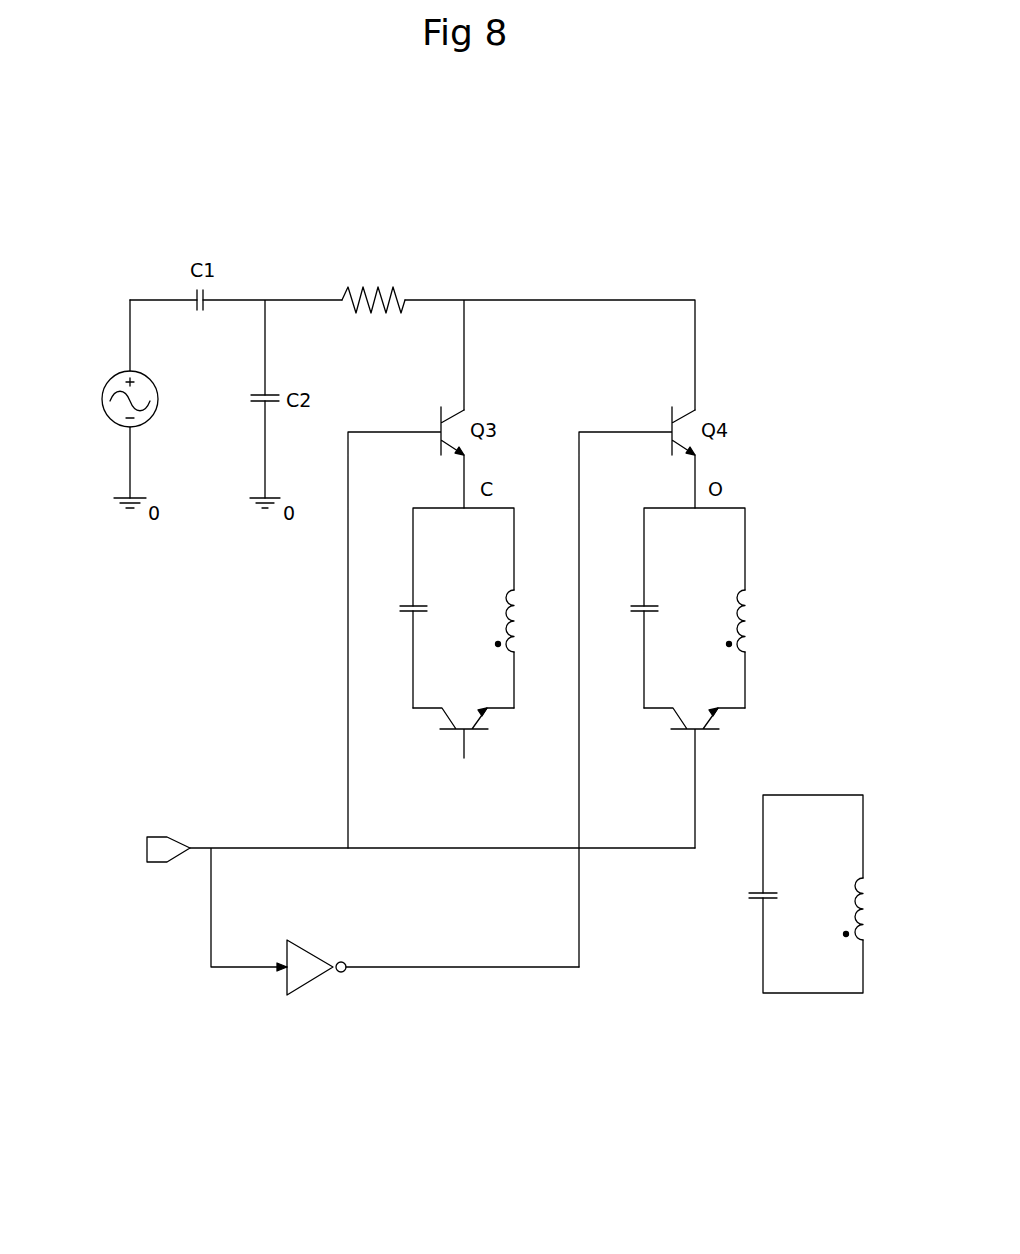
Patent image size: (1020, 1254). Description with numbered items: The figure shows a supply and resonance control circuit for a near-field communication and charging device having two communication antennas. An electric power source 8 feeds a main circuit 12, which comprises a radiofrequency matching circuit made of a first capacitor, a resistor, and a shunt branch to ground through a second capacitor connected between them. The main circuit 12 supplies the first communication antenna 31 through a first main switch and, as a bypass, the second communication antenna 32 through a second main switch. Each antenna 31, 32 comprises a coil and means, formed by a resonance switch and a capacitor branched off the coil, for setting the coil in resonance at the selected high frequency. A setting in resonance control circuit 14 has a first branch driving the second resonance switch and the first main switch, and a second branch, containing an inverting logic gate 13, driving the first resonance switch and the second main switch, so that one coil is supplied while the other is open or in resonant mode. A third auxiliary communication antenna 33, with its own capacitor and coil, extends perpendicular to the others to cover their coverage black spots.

The electric power source 8 is at (112, 376).
The main circuit 12 is at (343, 300).
The inverting logic gate 13 is at (293, 972).
The setting in resonance control circuit 14 is at (170, 857).
The first communication antenna 31 is at (495, 527).
The second communication antenna 32 is at (726, 527).
The third auxiliary communication antenna 33 is at (856, 908).